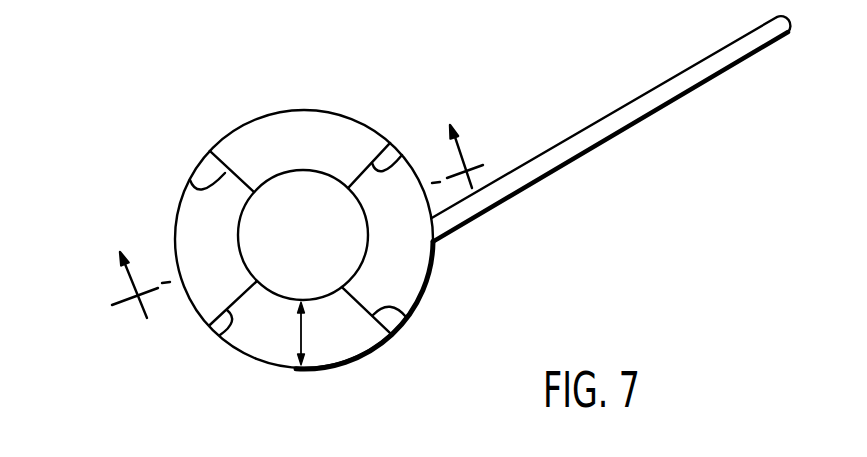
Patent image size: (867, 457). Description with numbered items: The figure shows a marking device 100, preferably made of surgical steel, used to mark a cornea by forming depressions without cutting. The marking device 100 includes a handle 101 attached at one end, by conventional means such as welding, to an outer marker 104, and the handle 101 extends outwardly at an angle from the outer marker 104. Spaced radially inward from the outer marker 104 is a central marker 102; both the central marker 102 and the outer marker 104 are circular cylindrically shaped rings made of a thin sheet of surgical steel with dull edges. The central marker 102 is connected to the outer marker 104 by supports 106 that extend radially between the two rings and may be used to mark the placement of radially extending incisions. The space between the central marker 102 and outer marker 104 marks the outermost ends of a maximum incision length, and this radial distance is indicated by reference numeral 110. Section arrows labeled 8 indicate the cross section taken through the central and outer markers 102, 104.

The marking device 100 is at (166, 80).
The handle 101 is at (650, 90).
The central marker 102 is at (327, 172).
The outer marker 104 is at (278, 110).
The supports 106 is at (192, 182).
The radial distance 110 is at (303, 328).
The section line 8- 8 is at (292, 217).